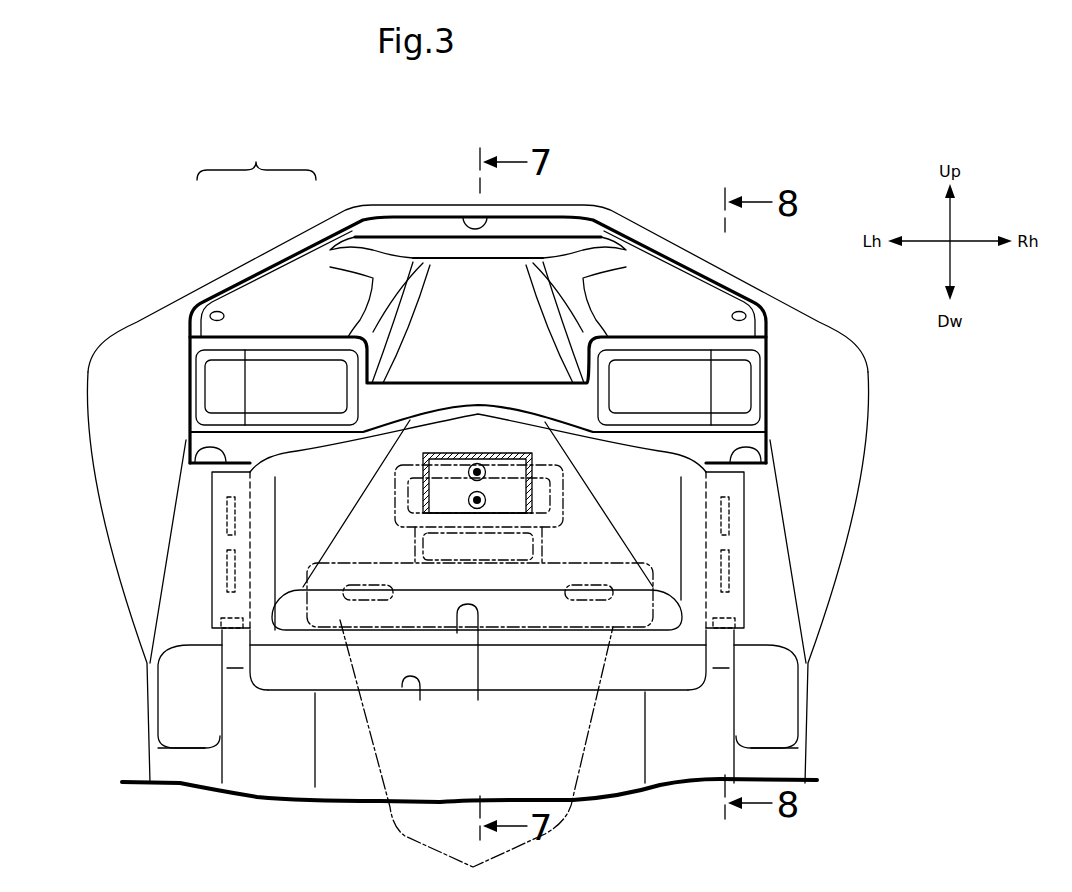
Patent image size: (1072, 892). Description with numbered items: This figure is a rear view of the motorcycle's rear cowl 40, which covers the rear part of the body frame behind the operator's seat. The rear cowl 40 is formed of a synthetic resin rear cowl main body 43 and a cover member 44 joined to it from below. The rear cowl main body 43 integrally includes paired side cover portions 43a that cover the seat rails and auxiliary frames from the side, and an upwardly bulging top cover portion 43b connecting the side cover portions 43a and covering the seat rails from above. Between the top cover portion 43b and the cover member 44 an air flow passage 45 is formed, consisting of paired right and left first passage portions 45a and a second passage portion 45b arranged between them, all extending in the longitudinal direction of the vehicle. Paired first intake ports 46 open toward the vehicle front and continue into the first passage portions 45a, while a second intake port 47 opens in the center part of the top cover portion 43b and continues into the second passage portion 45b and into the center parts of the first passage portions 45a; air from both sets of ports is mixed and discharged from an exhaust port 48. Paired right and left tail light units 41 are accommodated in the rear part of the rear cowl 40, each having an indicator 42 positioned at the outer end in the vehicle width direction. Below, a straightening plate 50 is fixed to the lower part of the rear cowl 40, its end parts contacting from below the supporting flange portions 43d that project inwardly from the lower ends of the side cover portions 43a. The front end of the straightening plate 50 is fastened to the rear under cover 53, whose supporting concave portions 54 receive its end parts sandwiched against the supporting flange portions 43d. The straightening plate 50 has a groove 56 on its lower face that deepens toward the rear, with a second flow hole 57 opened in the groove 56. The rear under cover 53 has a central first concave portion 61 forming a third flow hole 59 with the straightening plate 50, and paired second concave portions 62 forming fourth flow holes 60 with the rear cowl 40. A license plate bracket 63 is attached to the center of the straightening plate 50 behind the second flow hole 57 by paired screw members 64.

The rear cowl 40 is at (256, 159).
The tail light unit 41 is at (683, 350).
The indicator 42 is at (740, 392).
The rear cowl main body 43 is at (259, 240).
The side cover portion 43a is at (835, 543).
The top cover portion 43b is at (615, 212).
The supporting flange portion 43d is at (734, 450).
The cover member 44 is at (467, 262).
The air flow passage 45 is at (494, 290).
The first passage portion 45a is at (300, 312).
The second passage portion 45b is at (464, 312).
The first intake port 46 is at (746, 316).
The second intake port 47 is at (570, 250).
The exhaust port 48 is at (468, 262).
The straightening plate 50 is at (270, 632).
The rear under cover 53 is at (607, 772).
The supporting concave portion 54 is at (729, 620).
The groove 56 is at (470, 425).
The second flow hole 57 is at (478, 700).
The third flow hole 59 is at (528, 677).
The fourth flow hole 60 is at (178, 700).
The first concave portion 61 is at (420, 700).
The second concave portion 62 is at (767, 748).
The license plate bracket 63 is at (533, 488).
The screw member 64 is at (486, 498).